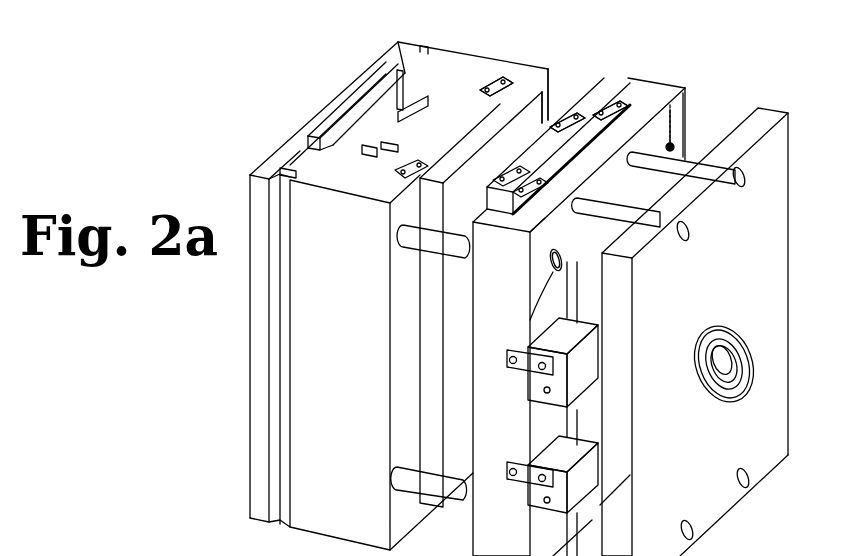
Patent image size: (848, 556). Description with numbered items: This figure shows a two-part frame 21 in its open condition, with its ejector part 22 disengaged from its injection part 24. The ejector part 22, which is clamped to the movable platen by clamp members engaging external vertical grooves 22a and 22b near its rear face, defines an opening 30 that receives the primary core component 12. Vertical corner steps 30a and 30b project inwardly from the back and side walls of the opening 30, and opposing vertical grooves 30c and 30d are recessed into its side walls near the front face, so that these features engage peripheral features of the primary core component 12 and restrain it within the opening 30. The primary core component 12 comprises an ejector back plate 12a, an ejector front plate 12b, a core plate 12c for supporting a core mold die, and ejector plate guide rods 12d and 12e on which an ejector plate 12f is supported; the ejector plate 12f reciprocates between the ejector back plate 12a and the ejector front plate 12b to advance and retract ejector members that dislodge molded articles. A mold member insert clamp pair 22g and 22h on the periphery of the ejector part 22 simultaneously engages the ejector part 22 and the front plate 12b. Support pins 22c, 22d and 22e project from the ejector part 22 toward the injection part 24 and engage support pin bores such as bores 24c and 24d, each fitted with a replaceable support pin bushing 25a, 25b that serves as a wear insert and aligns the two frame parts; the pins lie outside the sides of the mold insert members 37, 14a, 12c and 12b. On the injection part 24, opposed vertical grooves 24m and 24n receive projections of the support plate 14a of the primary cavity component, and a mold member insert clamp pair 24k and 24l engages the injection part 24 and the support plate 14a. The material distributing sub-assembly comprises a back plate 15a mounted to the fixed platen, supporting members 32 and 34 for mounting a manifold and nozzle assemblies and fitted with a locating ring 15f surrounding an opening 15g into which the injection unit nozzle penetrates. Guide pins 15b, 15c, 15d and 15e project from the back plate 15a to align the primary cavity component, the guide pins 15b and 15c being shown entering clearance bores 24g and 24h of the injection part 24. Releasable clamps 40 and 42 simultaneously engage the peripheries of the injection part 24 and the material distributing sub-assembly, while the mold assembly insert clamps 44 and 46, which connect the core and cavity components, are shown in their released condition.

The primary core component 12 is at (498, 62).
The ejector back plate 12a is at (367, 80).
The ejector front plate 12b is at (440, 135).
The core plate 12c is at (476, 203).
The ejector plate guide rod 12d is at (399, 70).
The ejector plate guide rod 12e is at (325, 135).
The ejector plate 12f is at (350, 110).
The support plate 14a is at (650, 105).
The back plate 15a is at (725, 290).
The guide pin 15b is at (682, 150).
The guide pin 15c is at (617, 212).
The guide pin 15d is at (688, 518).
The guide pin 15e is at (745, 465).
The locating ring 15f is at (700, 343).
The opening 15g is at (724, 342).
The two-part frame 21 is at (604, 95).
The ejector part 22 is at (345, 289).
The external vertical groove 22a is at (423, 46).
The external vertical groove 22b is at (284, 170).
The support pin 22c is at (565, 120).
The support pin 22d is at (420, 233).
The support pin 22e is at (422, 478).
The mold member insert clamp 22g is at (395, 170).
The mold member insert clamp 22h is at (547, 80).
The injection part 24 is at (512, 271).
The support pin bore 24c is at (674, 135).
The support pin bore 24d is at (530, 320).
The clearance bore 24g is at (640, 165).
The clearance bore 24h is at (585, 212).
The mold member insert clamp 24k is at (527, 145).
The mold member insert clamp 24l is at (618, 104).
The vertical groove 24m is at (672, 108).
The vertical groove 24n is at (533, 237).
The support pin bushing 25a is at (672, 140).
The support pin bushing 25b is at (552, 272).
The opening 30 is at (405, 80).
The vertical corner step 30a is at (380, 53).
The vertical corner step 30b is at (305, 145).
The vertical groove 30c is at (488, 85).
The vertical groove 30d is at (393, 150).
The member 32 is at (596, 512).
The member 34 is at (562, 519).
The mold insert member 37 is at (545, 140).
The clamp 40 is at (573, 343).
The clamp 42 is at (573, 455).
The mold assembly insert clamp 44 is at (572, 130).
The mold assembly insert clamp 46 is at (520, 195).